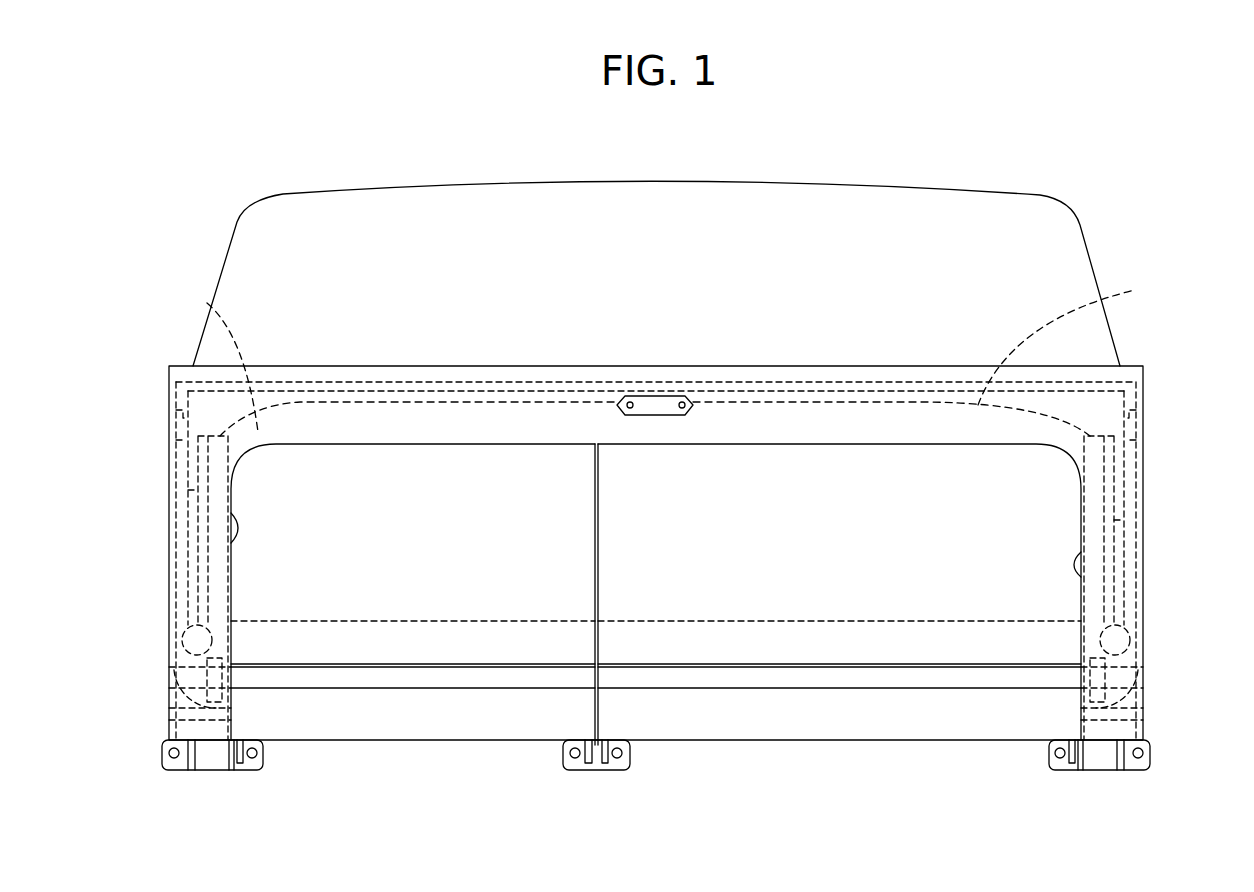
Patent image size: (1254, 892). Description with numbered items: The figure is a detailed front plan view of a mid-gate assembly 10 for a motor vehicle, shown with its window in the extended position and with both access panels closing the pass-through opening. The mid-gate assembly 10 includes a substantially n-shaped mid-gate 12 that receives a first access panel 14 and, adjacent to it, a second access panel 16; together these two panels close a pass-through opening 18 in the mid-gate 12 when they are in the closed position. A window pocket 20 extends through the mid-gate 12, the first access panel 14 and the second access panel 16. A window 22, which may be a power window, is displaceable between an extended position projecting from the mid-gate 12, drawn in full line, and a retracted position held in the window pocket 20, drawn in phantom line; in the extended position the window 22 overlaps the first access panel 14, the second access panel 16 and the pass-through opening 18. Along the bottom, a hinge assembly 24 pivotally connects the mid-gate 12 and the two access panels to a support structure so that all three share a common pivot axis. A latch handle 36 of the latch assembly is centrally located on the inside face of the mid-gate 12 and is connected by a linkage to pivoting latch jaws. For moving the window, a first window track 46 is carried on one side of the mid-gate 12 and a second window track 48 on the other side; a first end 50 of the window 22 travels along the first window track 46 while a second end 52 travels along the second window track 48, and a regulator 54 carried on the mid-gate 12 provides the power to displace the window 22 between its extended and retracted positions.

The mid-gate assembly 10 is at (1060, 156).
The mid-gate 12 is at (1143, 366).
The first access panel 14 is at (840, 562).
The second access panel 16 is at (418, 553).
The pass-through opening 18 is at (236, 543).
The window pocket 20 is at (207, 301).
The window 22 is at (635, 284).
The hinge assembly 24 is at (550, 761).
The latch handle 36 is at (660, 403).
The first window track 46 is at (207, 472).
The second window track 48 is at (1103, 522).
The first end of the window 50 is at (178, 410).
The second end of the window 52 is at (1135, 410).
The regulator 54 is at (1120, 643).